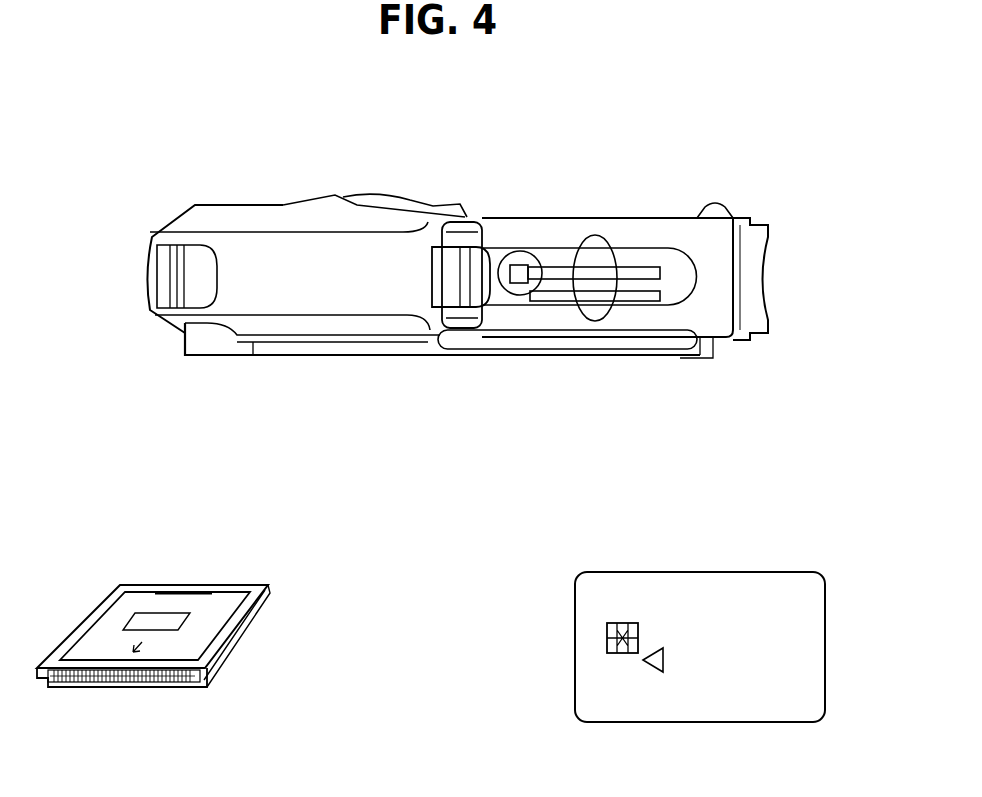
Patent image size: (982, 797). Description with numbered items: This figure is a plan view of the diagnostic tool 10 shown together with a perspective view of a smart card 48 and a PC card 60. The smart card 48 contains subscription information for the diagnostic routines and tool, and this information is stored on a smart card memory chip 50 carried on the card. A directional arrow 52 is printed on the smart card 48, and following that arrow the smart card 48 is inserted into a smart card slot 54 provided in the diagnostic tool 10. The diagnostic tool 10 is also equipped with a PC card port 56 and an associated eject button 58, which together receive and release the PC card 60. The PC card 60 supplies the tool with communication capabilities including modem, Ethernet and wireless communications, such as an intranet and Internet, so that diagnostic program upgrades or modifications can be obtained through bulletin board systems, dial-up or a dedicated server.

The diagnostic tool 10 is at (530, 186).
The smart card slot 54 is at (637, 303).
The PC card port 56 is at (597, 275).
The eject button 58 is at (512, 285).
The PC card 60 is at (270, 622).
The smart card 48 is at (652, 672).
The smart card memory chip 50 is at (607, 640).
The directional arrow 52 is at (652, 642).